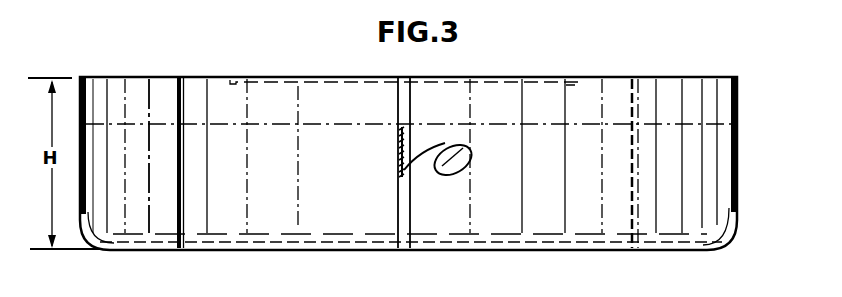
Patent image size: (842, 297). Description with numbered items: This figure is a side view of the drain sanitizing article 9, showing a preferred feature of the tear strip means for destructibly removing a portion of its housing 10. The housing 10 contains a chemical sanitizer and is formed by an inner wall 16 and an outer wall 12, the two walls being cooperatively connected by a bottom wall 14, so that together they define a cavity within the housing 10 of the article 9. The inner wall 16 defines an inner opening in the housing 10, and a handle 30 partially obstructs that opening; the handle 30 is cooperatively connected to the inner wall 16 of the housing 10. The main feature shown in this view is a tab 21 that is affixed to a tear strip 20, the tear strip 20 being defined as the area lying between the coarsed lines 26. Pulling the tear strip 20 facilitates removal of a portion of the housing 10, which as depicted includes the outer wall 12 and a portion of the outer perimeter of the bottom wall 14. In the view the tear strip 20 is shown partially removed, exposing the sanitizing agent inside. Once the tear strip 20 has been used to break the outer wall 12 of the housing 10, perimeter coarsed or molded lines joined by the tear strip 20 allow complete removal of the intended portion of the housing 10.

The drain sanitizing article 9 is at (672, 60).
The housing 10 is at (742, 105).
The outer wall 12 is at (733, 175).
The bottom wall 14 is at (594, 250).
The inner wall 16 is at (183, 96).
The tear strip 20 is at (410, 192).
The tab 21 is at (468, 168).
The coarsed lines 26 is at (397, 203).
The handle 30 is at (320, 80).